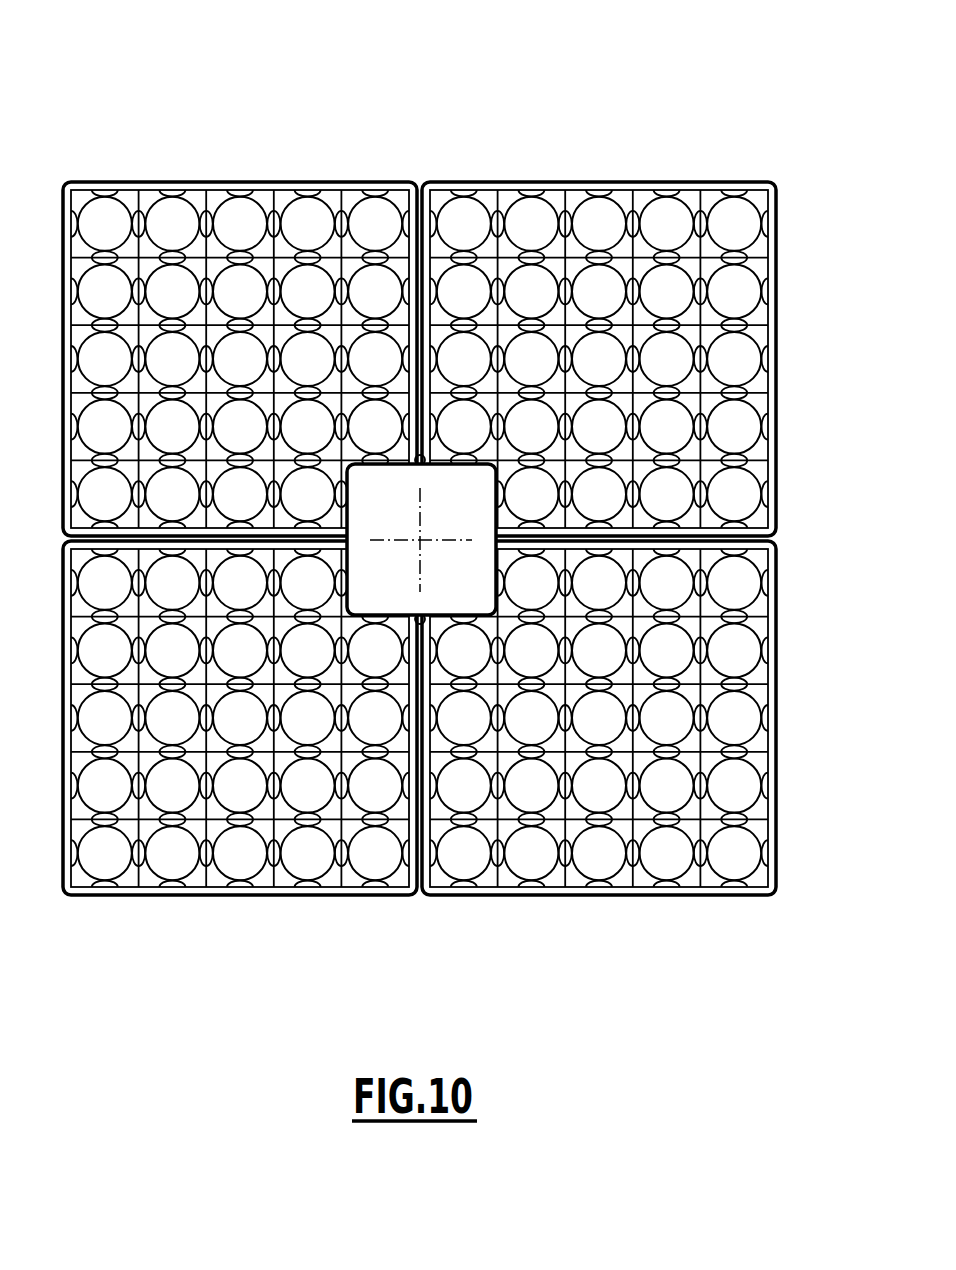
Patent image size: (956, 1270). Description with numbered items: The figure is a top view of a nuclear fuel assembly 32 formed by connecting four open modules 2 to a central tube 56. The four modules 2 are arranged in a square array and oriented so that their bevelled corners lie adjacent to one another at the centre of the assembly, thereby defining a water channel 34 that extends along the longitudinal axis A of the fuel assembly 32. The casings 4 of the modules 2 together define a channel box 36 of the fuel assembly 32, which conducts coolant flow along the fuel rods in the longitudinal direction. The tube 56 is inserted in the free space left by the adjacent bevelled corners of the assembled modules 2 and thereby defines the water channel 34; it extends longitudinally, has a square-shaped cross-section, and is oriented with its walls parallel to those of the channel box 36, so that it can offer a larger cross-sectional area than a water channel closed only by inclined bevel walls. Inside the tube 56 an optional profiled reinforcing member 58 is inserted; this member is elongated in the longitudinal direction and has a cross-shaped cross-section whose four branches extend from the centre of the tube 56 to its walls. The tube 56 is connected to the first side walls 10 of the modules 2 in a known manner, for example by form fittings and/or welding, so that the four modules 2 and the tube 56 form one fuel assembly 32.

The module 2 is at (141, 127).
The casing 4 is at (231, 177).
The first side wall 10 is at (398, 828).
The fuel assembly 32 is at (411, 96).
The water channel 34 is at (470, 519).
The channel box 36 is at (780, 180).
The tube 56 is at (350, 578).
The reinforcing member 58 is at (472, 540).
The longitudinal axis A is at (420, 548).